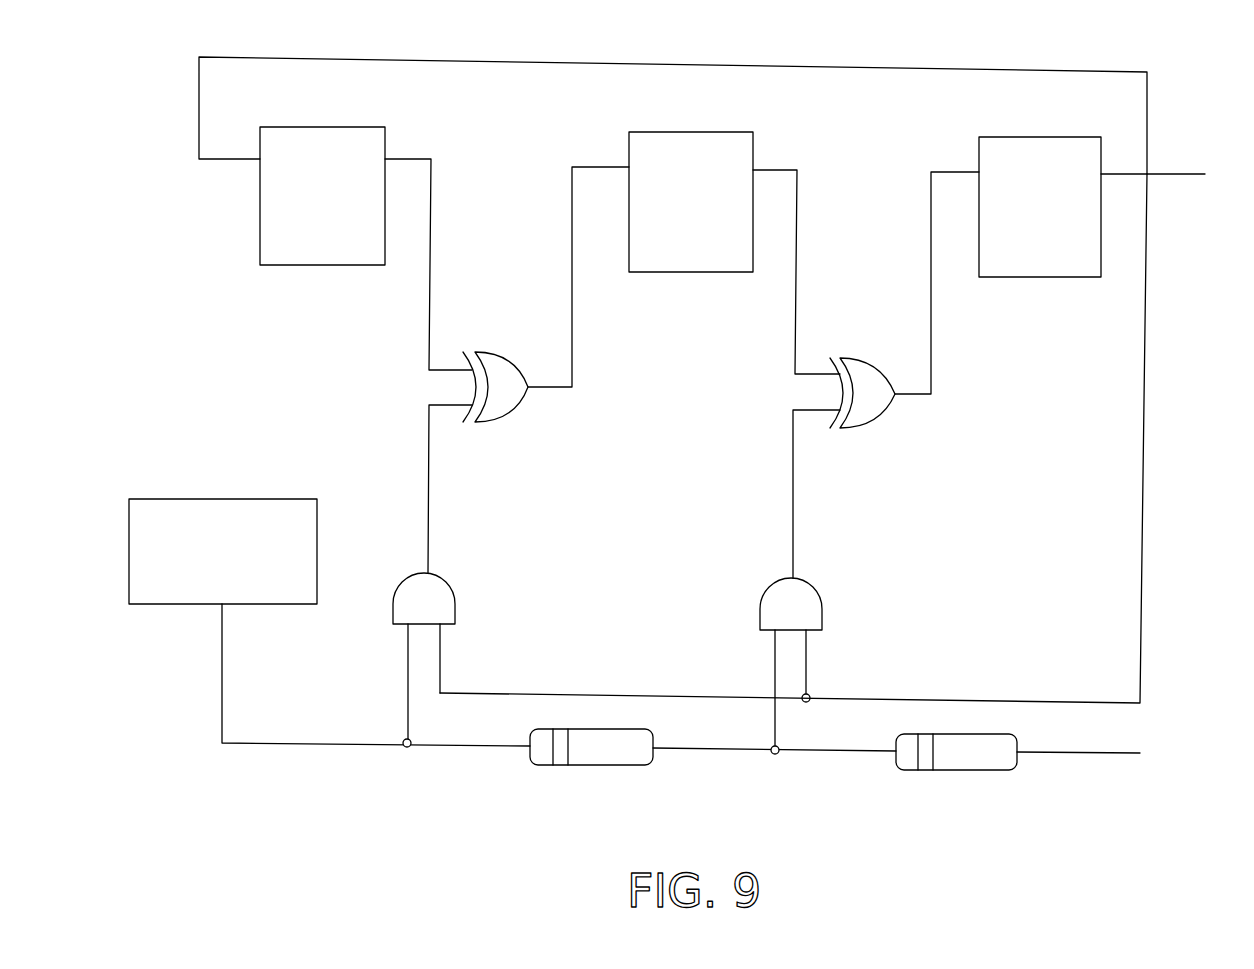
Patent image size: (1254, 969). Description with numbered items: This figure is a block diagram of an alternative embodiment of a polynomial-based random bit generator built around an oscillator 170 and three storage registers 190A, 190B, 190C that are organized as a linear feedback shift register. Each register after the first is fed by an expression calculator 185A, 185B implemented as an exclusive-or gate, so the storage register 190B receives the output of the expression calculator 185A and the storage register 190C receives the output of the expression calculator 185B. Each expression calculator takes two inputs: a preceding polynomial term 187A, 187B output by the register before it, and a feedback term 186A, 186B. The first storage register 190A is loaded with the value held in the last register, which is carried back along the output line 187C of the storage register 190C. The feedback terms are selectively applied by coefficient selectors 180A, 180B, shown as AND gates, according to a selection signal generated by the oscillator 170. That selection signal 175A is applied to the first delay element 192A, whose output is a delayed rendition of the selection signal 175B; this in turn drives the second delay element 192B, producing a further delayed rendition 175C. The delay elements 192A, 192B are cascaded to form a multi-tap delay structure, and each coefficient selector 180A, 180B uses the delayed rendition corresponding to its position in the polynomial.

The oscillator 170 is at (226, 499).
The selection signal 175A is at (468, 753).
The delayed rendition of the selection signal 175B is at (730, 753).
The further delayed rendition of the selection signal 175C is at (1078, 758).
The coefficient selector 180A is at (455, 604).
The coefficient selector 180B is at (822, 608).
The expression calculator 185A is at (480, 352).
The expression calculator 185B is at (846, 358).
The feedback term 186A is at (428, 500).
The feedback term 186B is at (793, 510).
The preceding polynomial term 187A is at (431, 229).
The preceding polynomial term 187B is at (797, 237).
The preceding polynomial term 187C is at (1147, 250).
The storage register 190A is at (322, 127).
The storage register 190B is at (693, 132).
The storage register 190C is at (1042, 137).
The delay element 192A is at (590, 768).
The delay element 192B is at (955, 772).